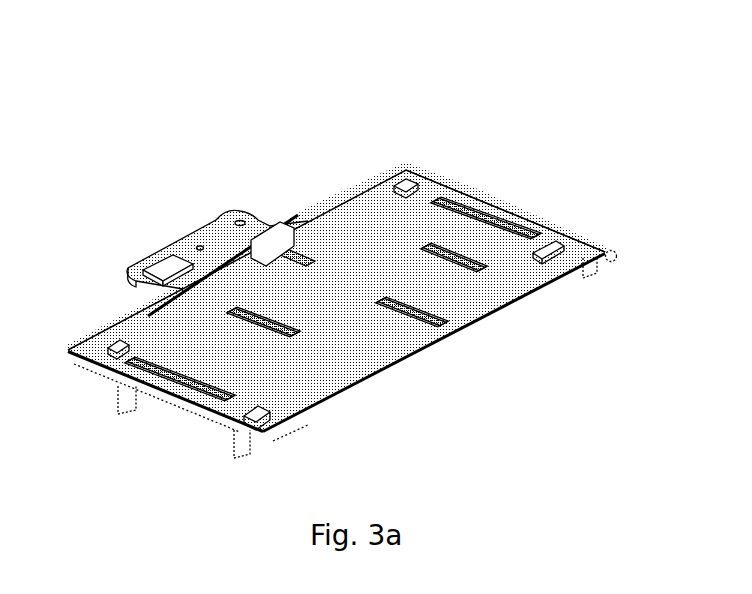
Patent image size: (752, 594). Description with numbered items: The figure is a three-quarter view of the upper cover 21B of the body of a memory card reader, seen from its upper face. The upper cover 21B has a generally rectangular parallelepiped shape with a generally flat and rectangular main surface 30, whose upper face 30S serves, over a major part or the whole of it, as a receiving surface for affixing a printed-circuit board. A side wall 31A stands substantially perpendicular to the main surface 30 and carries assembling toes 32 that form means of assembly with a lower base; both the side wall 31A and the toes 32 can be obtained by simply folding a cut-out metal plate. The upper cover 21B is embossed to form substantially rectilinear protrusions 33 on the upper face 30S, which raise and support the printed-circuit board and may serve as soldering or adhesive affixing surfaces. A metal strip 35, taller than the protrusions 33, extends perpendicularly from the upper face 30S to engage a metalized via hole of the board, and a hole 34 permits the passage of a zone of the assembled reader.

The main surface 30 is at (335, 188).
The upper face 30S is at (316, 390).
The upper cover 21B is at (438, 140).
The side wall 31A is at (184, 408).
The protrusions 33 is at (500, 194).
The metal strip 35 is at (393, 172).
The assembling toes 32 is at (590, 264).
The hole 34 is at (264, 214).